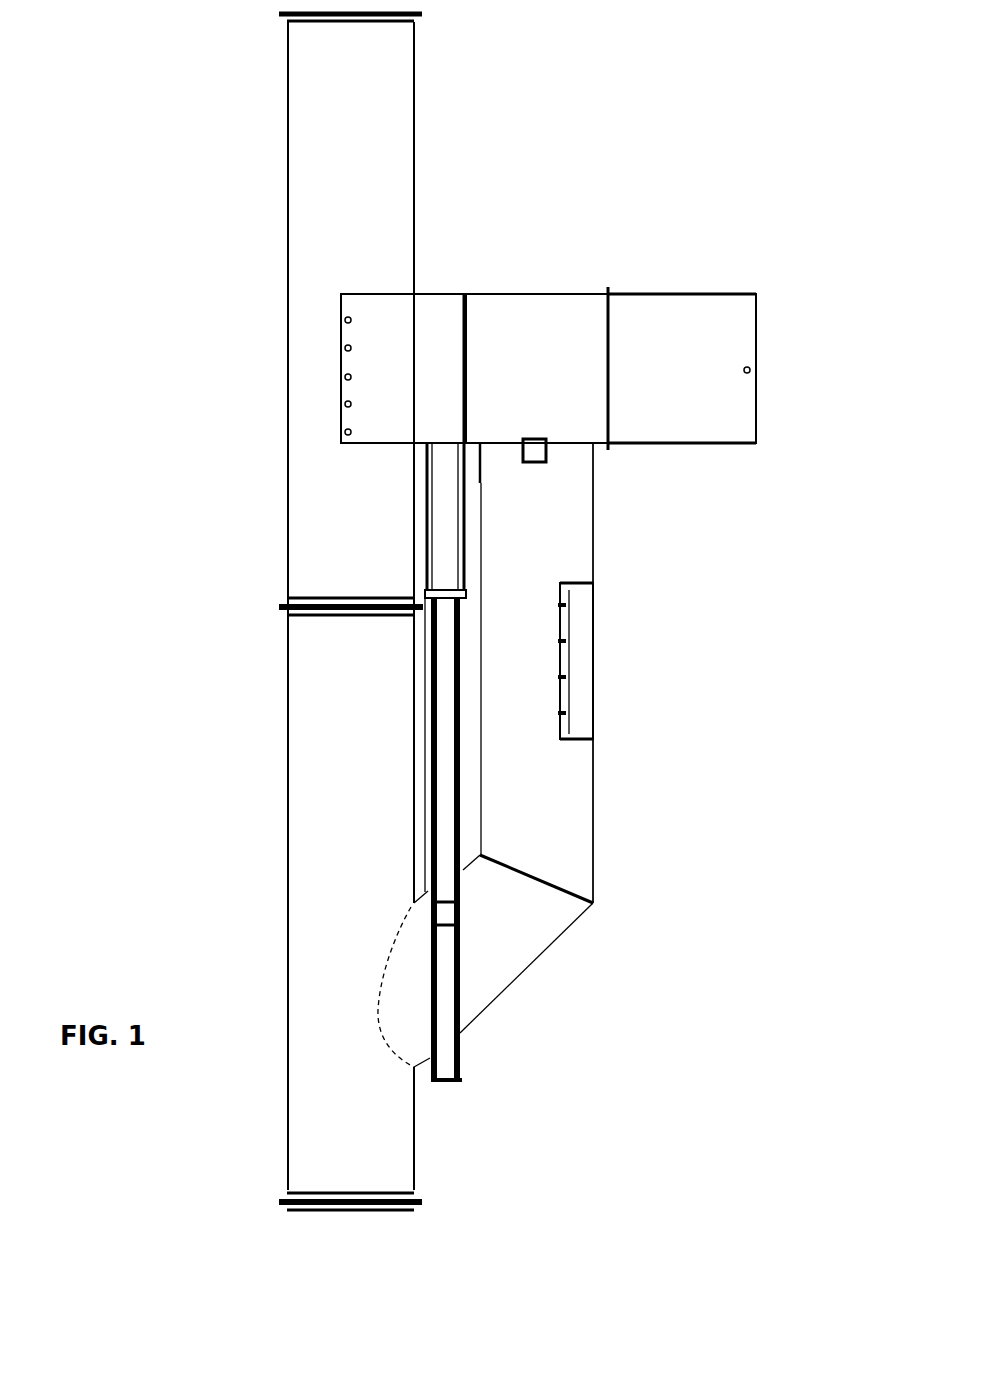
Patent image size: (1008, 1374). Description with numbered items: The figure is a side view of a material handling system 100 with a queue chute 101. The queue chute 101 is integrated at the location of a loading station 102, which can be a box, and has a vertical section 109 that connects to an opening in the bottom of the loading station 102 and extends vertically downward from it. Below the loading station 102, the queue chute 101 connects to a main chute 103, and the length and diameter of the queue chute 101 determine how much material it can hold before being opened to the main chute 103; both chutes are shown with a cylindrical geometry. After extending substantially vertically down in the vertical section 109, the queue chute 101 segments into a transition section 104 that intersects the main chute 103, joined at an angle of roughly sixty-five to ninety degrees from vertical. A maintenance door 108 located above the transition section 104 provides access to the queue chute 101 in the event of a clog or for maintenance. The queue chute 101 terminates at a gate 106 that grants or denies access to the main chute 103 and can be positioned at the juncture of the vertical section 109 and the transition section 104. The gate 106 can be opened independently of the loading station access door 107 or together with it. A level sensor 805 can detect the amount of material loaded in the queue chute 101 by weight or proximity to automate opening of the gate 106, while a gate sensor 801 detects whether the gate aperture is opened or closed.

The material handling system 100 is at (177, 243).
The queue chute 101 is at (760, 451).
The loading station 102 is at (544, 360).
The main chute 103 is at (317, 567).
The transition section 104 is at (641, 921).
The gate 106 is at (447, 977).
The loading station access door 107 is at (684, 377).
The maintenance door 108 is at (577, 660).
The vertical section 109 is at (641, 451).
The gate sensor 801 is at (431, 910).
The level sensor 805 is at (523, 464).